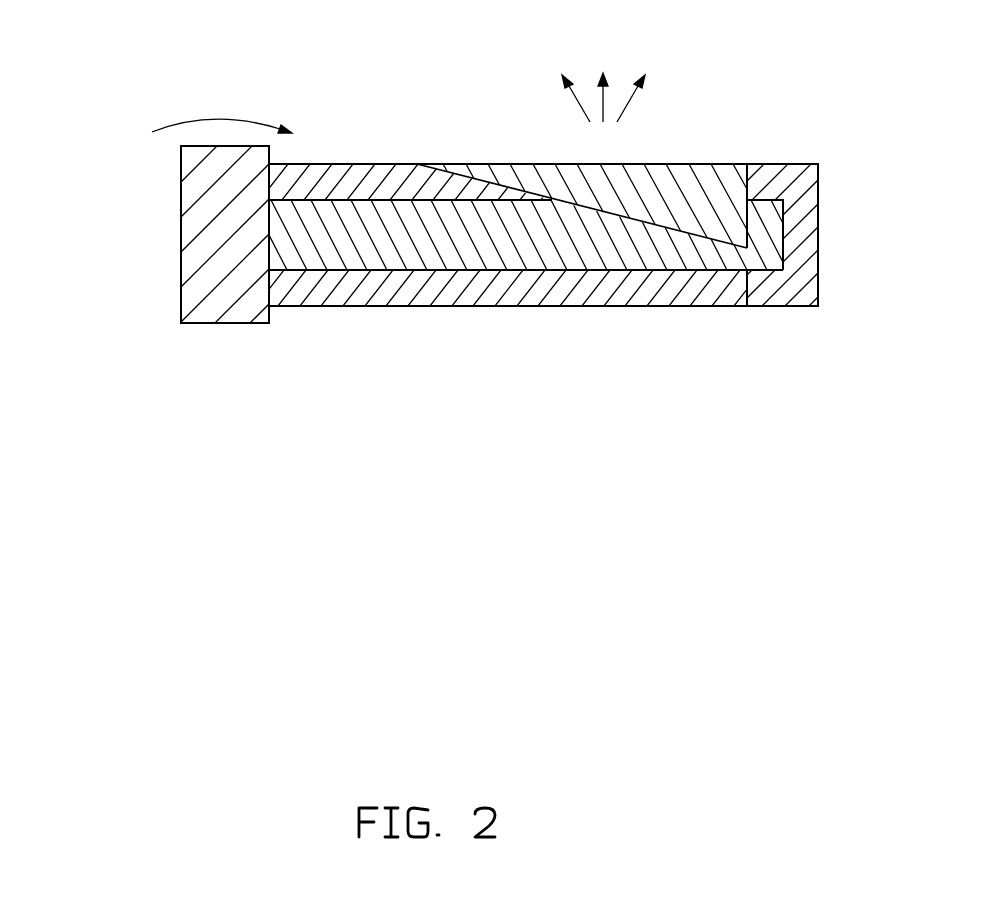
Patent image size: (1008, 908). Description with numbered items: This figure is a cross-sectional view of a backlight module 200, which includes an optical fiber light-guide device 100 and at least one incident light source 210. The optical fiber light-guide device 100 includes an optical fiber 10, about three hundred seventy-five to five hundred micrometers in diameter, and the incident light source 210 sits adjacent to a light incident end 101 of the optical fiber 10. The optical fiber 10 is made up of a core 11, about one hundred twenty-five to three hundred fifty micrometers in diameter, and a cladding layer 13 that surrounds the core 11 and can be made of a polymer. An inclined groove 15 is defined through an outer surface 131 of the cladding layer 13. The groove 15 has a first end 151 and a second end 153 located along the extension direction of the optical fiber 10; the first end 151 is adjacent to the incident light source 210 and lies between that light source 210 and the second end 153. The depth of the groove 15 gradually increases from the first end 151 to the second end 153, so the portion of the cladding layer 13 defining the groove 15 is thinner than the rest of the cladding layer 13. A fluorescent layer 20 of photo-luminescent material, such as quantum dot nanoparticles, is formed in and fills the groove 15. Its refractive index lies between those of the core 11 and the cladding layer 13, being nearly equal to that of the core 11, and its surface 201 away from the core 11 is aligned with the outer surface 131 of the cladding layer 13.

The optical fiber 10 is at (535, 100).
The core 11 is at (468, 237).
The cladding layer 13 is at (344, 180).
The inclined groove 15 is at (483, 182).
The fluorescent layer 20 is at (640, 175).
The optical fiber light-guide device 100 is at (197, 132).
The light incident end 101 is at (269, 307).
The outer surface 131 is at (775, 164).
The first end 151 is at (421, 164).
The second end 153 is at (747, 220).
The backlight module 200 is at (102, 112).
The surface 201 is at (625, 163).
The incident light source 210 is at (205, 183).